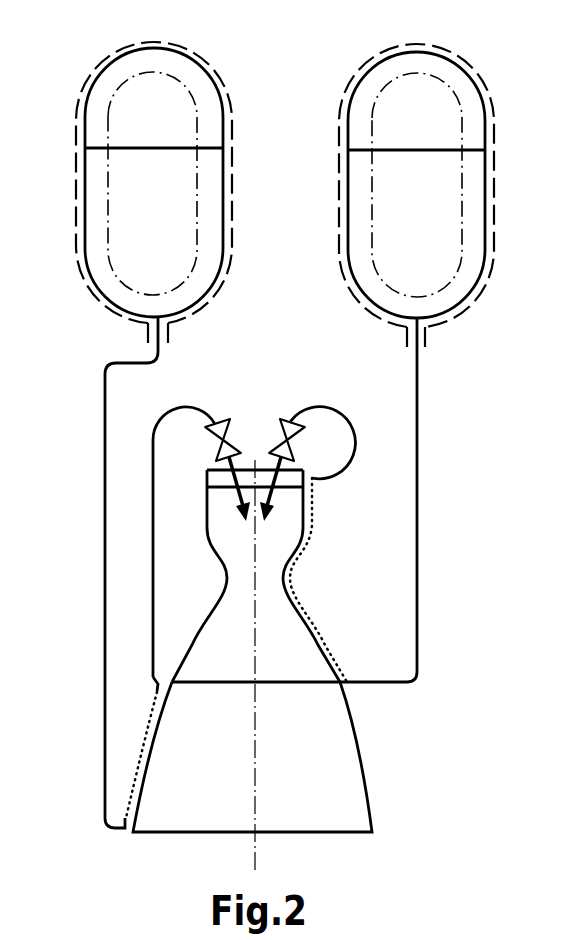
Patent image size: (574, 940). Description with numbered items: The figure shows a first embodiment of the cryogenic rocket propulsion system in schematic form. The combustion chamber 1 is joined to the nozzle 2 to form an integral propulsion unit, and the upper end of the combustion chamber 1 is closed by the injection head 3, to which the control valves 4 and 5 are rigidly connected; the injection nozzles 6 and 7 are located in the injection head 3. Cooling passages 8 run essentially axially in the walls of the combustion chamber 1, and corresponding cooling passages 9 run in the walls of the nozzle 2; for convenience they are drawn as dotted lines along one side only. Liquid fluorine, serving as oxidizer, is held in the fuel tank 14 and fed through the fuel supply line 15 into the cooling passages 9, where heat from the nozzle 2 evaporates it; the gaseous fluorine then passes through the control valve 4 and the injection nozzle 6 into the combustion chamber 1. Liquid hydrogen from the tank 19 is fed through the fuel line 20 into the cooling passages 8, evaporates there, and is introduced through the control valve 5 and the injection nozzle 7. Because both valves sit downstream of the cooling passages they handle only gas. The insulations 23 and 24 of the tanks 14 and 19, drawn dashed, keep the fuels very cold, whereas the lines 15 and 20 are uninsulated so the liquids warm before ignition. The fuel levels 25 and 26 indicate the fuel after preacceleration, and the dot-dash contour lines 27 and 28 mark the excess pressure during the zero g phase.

The combustion chamber 1 is at (283, 575).
The nozzle 2 is at (143, 787).
The injection head 3 is at (207, 479).
The control valve 4 is at (213, 438).
The control valve 5 is at (292, 438).
The injection nozzle 6 is at (232, 487).
The injection nozzle 7 is at (283, 487).
The cooling passages 8 is at (297, 598).
The cooling passages 9 is at (155, 737).
The fuel tank 14 is at (85, 193).
The fuel supply line 15 is at (105, 378).
The tank 19 is at (348, 197).
The fuel line 20 is at (417, 444).
The insulation 23 is at (76, 150).
The insulation 24 is at (494, 199).
The fuel level 25 is at (158, 148).
The fuel level 26 is at (418, 150).
The dot-dash contour line 27 is at (108, 122).
The dot-dash contour line 28 is at (372, 125).